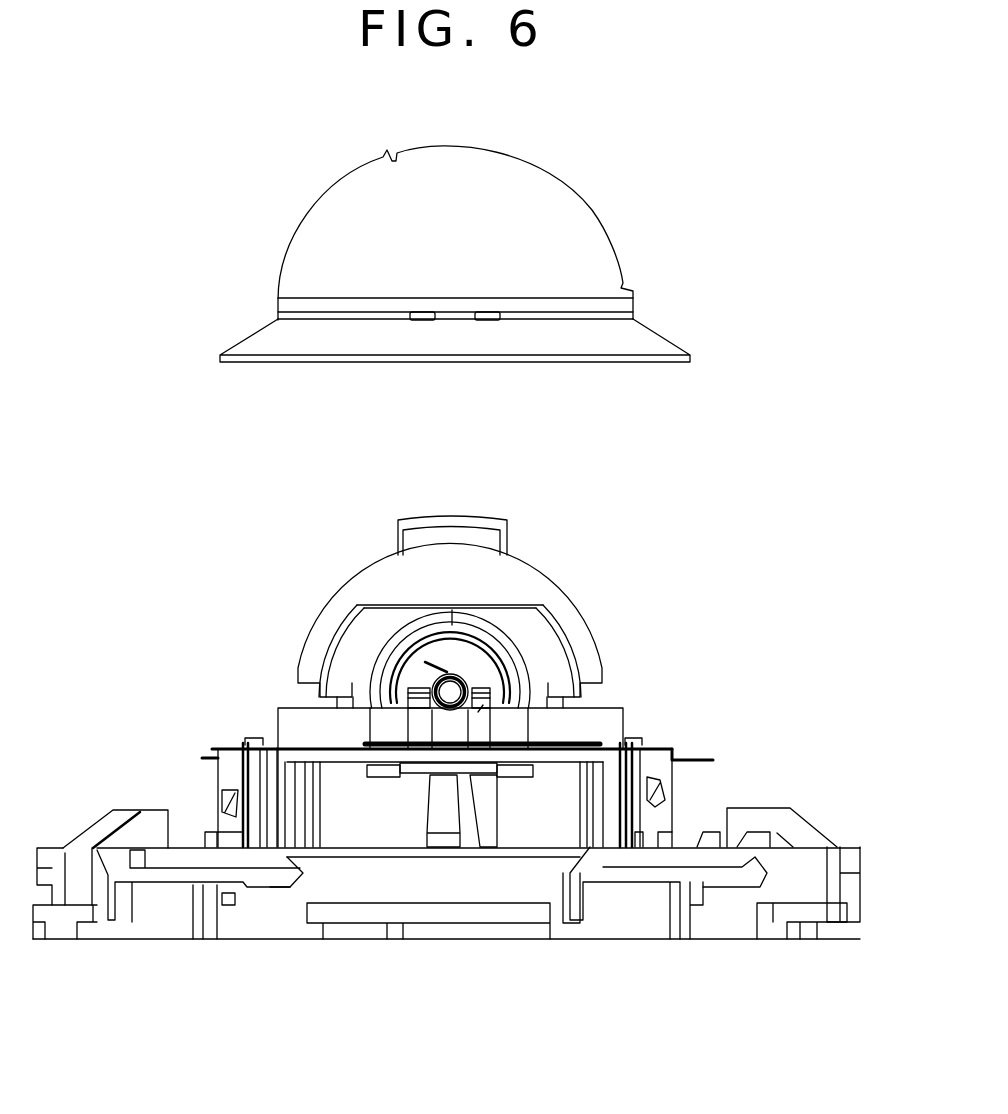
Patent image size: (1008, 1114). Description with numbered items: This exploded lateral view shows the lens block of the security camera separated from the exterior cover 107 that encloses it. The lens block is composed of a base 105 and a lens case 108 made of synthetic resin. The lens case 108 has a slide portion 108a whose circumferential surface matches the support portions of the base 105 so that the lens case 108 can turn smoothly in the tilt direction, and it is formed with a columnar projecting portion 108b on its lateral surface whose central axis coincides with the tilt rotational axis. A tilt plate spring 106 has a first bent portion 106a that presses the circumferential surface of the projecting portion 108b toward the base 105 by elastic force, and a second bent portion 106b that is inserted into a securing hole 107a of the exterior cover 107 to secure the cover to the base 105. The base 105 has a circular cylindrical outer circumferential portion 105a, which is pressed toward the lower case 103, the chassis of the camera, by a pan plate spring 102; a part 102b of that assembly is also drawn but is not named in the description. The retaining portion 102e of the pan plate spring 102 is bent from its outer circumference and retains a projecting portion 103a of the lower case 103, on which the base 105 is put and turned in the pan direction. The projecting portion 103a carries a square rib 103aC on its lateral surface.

The exterior cover 107 is at (525, 186).
The securing holes 107a is at (487, 322).
The lens case 108 is at (537, 561).
The slide portion 108a is at (497, 643).
The projecting portion 108b is at (410, 668).
The tilt plate spring 106 is at (483, 710).
The bent portion 106a is at (413, 623).
The bent portion 106b is at (400, 680).
The base 105 is at (600, 715).
The outer circumferential portion 105a is at (307, 753).
The pan plate spring 102 is at (660, 748).
The retaining portion 102e is at (674, 767).
The frame column 102b is at (653, 808).
The lower case 103 is at (785, 886).
The projecting portion 103a is at (277, 788).
The square rib 103aC is at (665, 790).